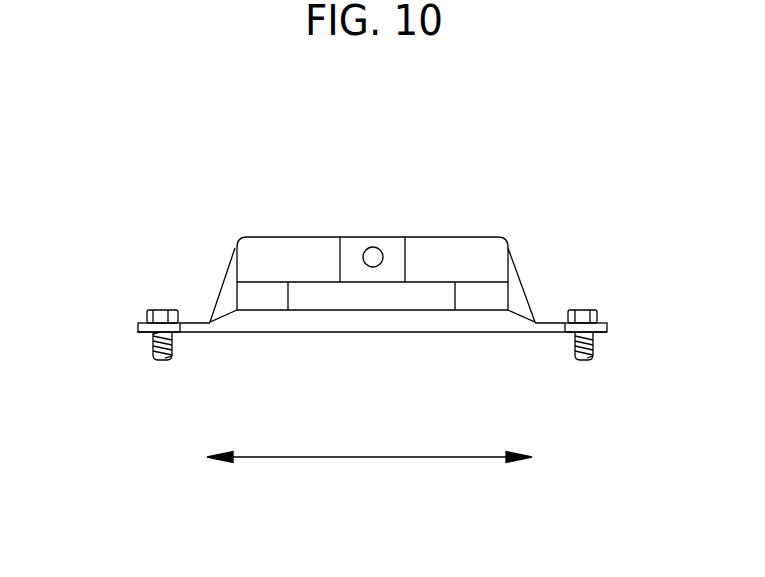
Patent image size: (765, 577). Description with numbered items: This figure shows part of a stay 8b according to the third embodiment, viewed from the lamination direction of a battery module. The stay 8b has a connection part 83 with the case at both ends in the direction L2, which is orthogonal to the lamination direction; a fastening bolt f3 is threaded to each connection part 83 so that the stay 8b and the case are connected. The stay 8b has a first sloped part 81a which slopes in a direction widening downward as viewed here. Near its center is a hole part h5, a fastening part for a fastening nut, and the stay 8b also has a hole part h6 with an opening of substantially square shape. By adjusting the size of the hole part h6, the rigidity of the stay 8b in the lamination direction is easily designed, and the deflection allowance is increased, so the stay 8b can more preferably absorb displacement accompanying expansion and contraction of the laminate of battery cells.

The stay 8b is at (604, 150).
The first sloped part 81a is at (226, 275).
The hole part h5 is at (376, 256).
The hole part h6 is at (427, 290).
The fastening bolt f3 is at (174, 310).
The connection part 83 is at (141, 325).
The direction orthogonal to the lamination direction L2 is at (381, 460).